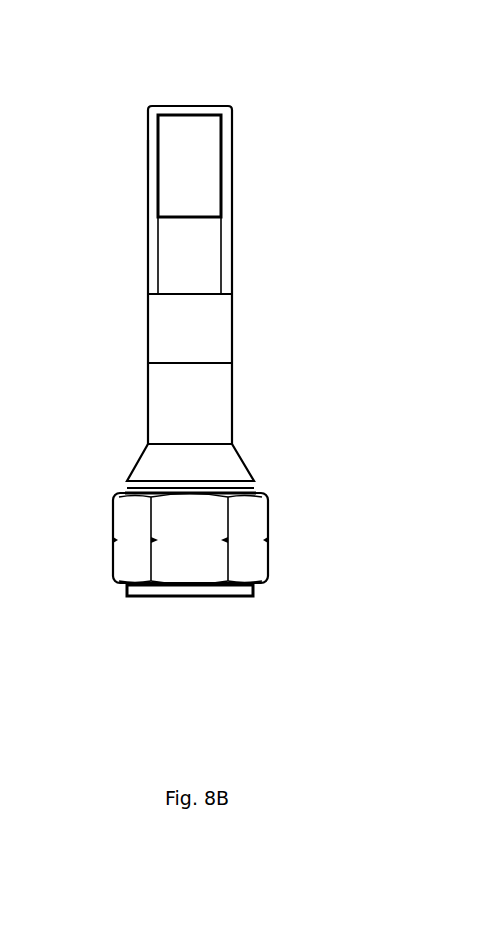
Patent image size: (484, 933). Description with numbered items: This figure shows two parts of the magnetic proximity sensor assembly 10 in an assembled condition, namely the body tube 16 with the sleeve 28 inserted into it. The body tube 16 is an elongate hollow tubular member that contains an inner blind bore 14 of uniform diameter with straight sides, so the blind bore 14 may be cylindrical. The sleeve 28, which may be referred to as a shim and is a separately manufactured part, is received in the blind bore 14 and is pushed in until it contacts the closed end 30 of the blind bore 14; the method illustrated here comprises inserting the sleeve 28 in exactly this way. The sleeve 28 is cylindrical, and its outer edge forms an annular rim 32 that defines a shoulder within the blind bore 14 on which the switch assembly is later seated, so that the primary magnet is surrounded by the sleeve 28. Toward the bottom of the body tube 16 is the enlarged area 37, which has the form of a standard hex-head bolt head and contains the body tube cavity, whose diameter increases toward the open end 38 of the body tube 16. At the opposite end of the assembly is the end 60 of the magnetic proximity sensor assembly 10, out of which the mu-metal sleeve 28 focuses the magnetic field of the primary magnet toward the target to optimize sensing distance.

The magnetic proximity sensor assembly 10 is at (255, 108).
The blind bore 14 is at (197, 184).
The body tube 16 is at (212, 333).
The sleeve 28 is at (160, 153).
The closed end 30 is at (168, 159).
The rim 32 is at (158, 220).
The enlarged area 37 is at (248, 543).
The open end 38 is at (190, 600).
The end 60 is at (168, 159).